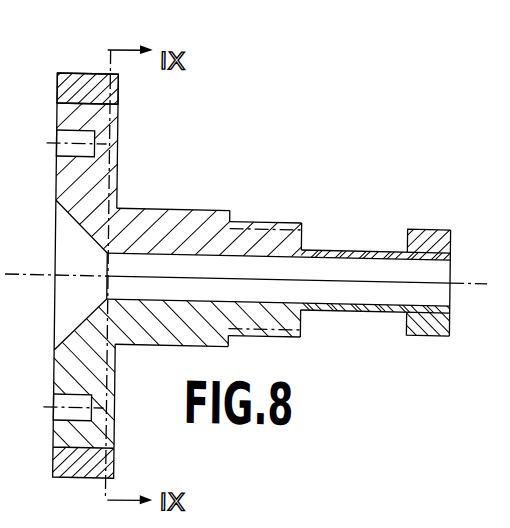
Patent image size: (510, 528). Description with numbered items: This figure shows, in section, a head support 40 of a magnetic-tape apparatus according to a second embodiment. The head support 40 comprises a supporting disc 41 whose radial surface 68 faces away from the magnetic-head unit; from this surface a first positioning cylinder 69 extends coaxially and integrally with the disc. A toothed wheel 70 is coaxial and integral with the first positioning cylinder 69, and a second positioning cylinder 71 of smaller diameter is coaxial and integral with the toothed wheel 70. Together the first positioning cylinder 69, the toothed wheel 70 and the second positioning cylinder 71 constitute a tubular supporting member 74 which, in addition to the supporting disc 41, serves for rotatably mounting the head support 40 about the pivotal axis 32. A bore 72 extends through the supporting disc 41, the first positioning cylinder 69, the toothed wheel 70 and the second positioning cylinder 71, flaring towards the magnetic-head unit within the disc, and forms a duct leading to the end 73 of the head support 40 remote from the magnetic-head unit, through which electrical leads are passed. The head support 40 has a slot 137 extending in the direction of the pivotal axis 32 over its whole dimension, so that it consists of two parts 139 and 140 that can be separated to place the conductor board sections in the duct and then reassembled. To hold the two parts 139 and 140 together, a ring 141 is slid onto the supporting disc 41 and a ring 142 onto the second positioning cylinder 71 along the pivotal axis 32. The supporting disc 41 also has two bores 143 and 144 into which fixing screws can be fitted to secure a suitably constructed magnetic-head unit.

The ring 141 is at (75, 85).
The bore 143 is at (56, 139).
The bore 144 is at (63, 402).
The supporting disc 41 is at (61, 190).
The radial surface 68 is at (119, 198).
The first positioning cylinder 69 is at (149, 223).
The part of the head support 139 is at (195, 209).
The part of the head support 140 is at (158, 350).
The toothed wheel 70 is at (269, 224).
The bore 72 is at (216, 262).
The tubular supporting member 74 is at (307, 218).
The second positioning cylinder 71 is at (347, 252).
The ring 142 is at (423, 228).
The end of the head support 73 is at (452, 297).
The head support 40 is at (167, 127).
The slot 137 is at (343, 282).
The pivotal axis 32 is at (469, 280).